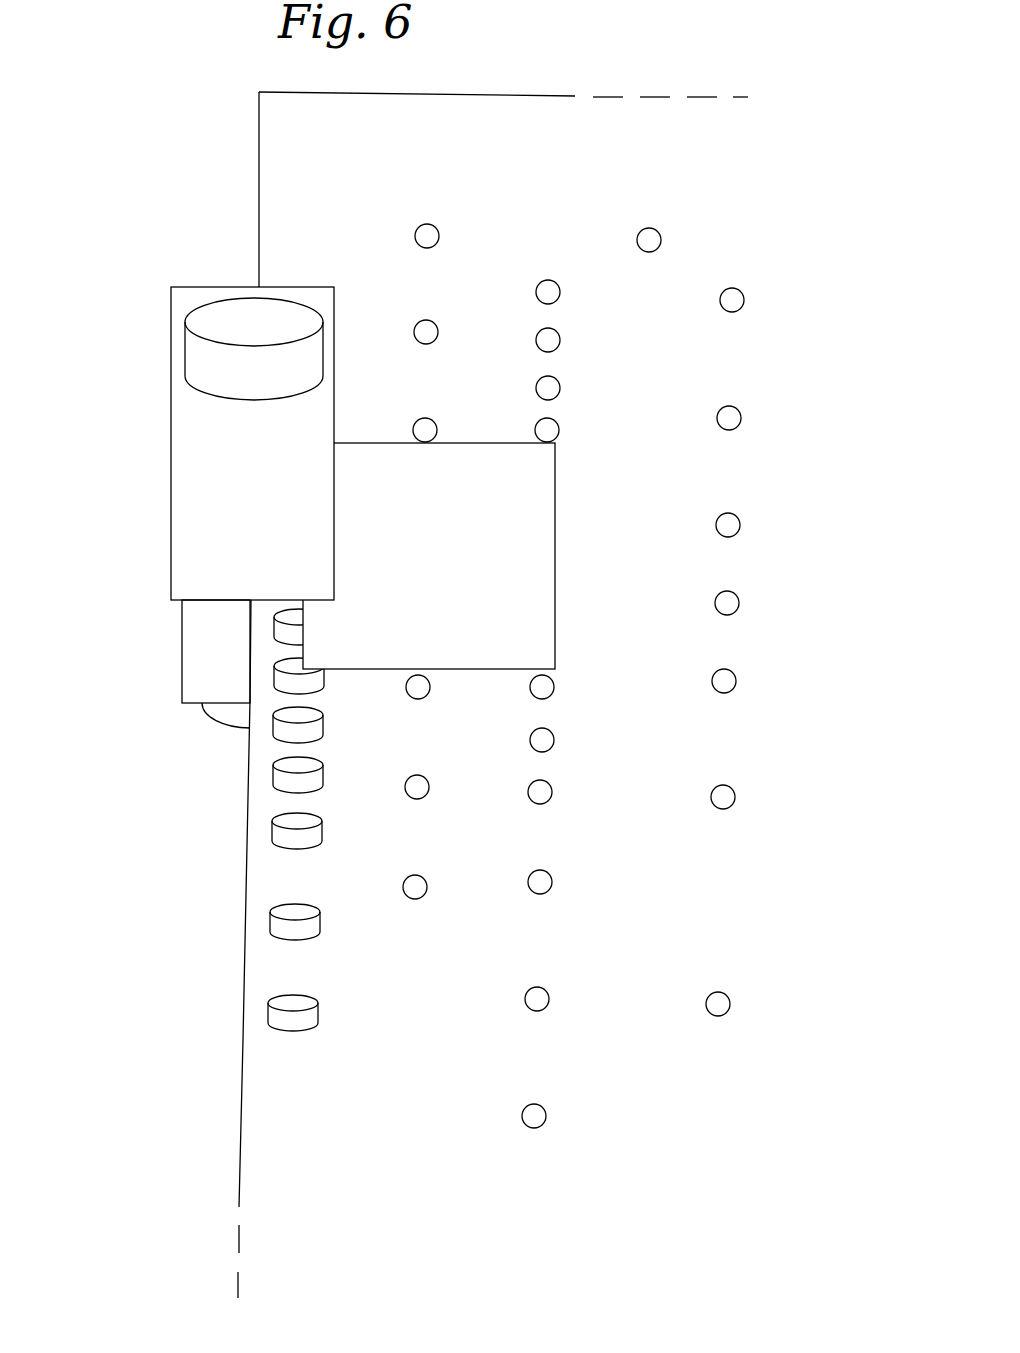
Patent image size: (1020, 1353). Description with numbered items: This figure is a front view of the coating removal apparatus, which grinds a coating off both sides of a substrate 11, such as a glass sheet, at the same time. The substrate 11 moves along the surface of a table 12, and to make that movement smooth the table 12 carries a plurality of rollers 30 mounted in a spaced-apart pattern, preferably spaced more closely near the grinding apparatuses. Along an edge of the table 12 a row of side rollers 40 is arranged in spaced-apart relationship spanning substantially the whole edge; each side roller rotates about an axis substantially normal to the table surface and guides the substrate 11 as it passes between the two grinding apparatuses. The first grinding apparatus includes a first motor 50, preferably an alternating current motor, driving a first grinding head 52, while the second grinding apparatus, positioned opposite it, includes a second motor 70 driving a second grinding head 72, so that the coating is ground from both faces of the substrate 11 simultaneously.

The substrate 11 is at (555, 578).
The table 12 is at (318, 1113).
The rollers 30 is at (417, 320).
The side rollers 40 is at (283, 838).
The first motor 50 is at (202, 370).
The first grinding head 52 is at (205, 475).
The second motor 70 is at (230, 715).
The second grinding head 72 is at (200, 653).